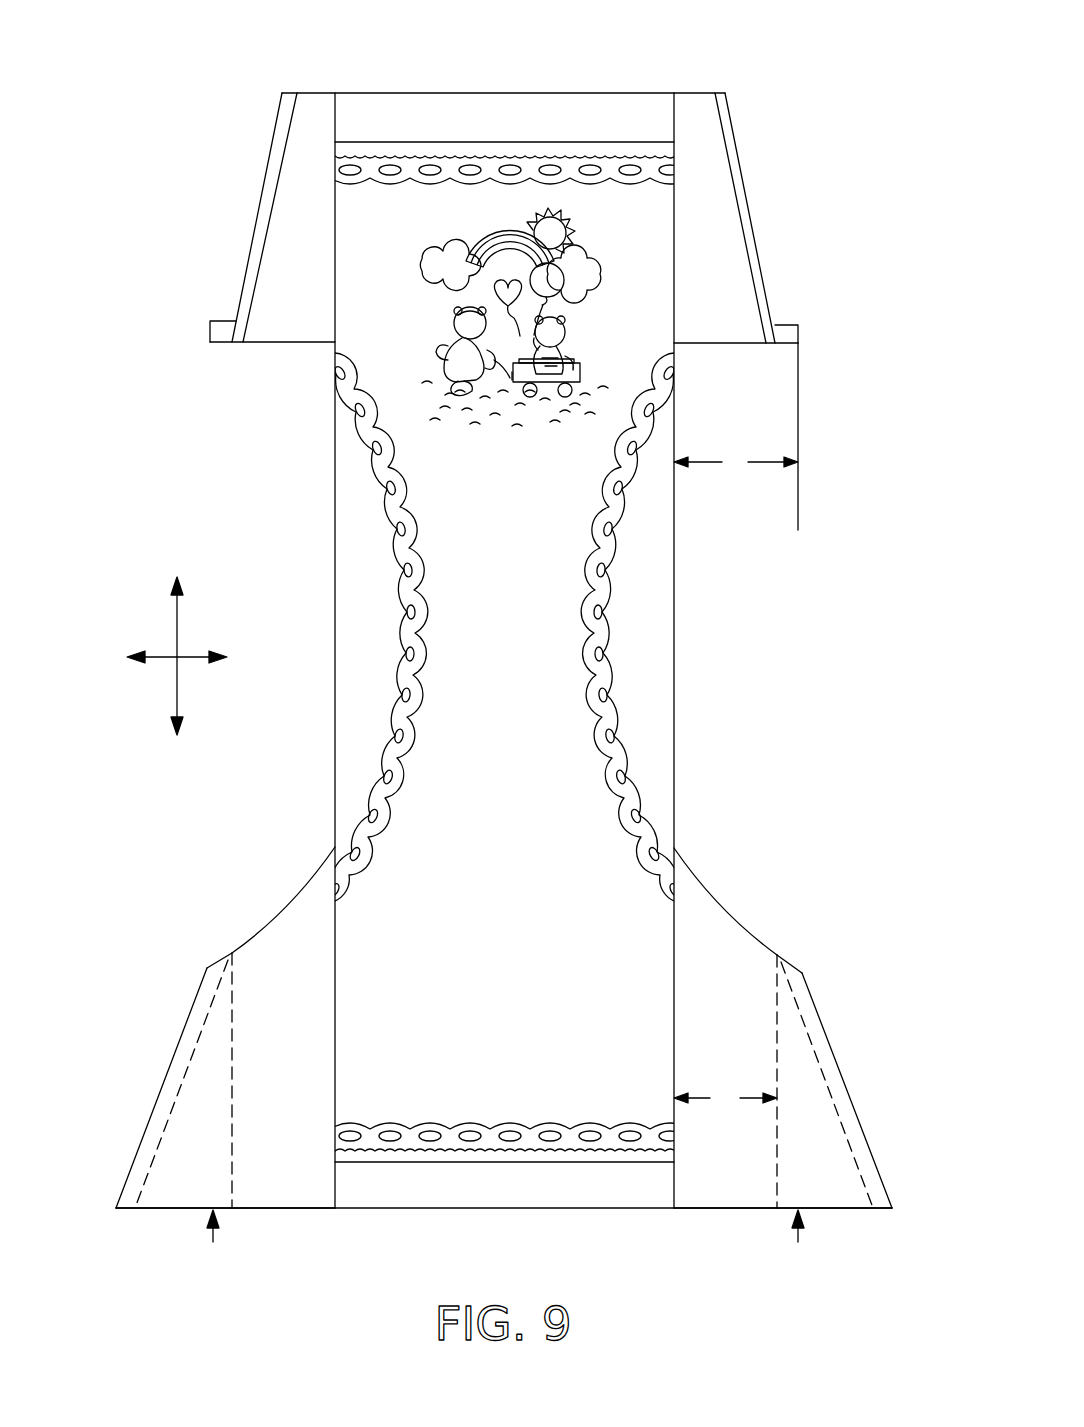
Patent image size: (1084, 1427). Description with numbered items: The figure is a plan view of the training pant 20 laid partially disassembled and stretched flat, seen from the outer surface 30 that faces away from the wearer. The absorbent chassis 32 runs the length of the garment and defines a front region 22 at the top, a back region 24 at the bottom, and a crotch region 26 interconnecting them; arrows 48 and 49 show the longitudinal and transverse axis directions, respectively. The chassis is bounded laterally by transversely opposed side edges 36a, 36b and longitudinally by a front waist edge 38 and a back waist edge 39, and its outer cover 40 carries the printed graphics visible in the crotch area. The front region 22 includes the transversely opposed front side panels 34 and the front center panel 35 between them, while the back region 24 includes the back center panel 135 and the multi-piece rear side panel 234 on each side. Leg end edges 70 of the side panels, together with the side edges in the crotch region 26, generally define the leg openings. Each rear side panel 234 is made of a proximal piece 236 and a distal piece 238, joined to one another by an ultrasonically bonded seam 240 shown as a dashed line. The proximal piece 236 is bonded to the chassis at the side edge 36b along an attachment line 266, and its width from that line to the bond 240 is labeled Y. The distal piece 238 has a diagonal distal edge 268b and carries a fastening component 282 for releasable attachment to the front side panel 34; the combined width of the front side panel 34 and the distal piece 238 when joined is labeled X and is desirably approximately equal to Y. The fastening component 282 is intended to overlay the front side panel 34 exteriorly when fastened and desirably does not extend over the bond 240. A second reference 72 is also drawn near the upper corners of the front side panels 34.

The training pant 20 is at (243, 71).
The front region 22 is at (812, 299).
The back region 24 is at (380, 1000).
The crotch region 26 is at (560, 560).
The outer surface 30 is at (658, 690).
The absorbent chassis 32 is at (600, 828).
The front side panels 34 is at (285, 243).
The front center panel 35 is at (529, 90).
The side edge 36a is at (335, 568).
The side edge 36b is at (678, 742).
The front waist edge 38 is at (457, 92).
The back waist edge 39 is at (372, 1208).
The outer cover 40 is at (385, 372).
The longitudinal axis arrow 48 is at (177, 615).
The transverse axis arrow 49 is at (157, 660).
The leg end edges 70 is at (250, 344).
The mating fastening components 72 is at (297, 92).
The back center panel 135 is at (488, 1077).
The rear side panel 234 is at (507, 1261).
The proximal side panel piece 236 is at (272, 1208).
The distal side panel piece 238 is at (168, 1208).
The ultrasonically bonded seam 240 is at (176, 1084).
The attachment line 266 is at (335, 1072).
The diagonal distal edge 268b is at (135, 1155).
The fastening component 282 is at (198, 1017).